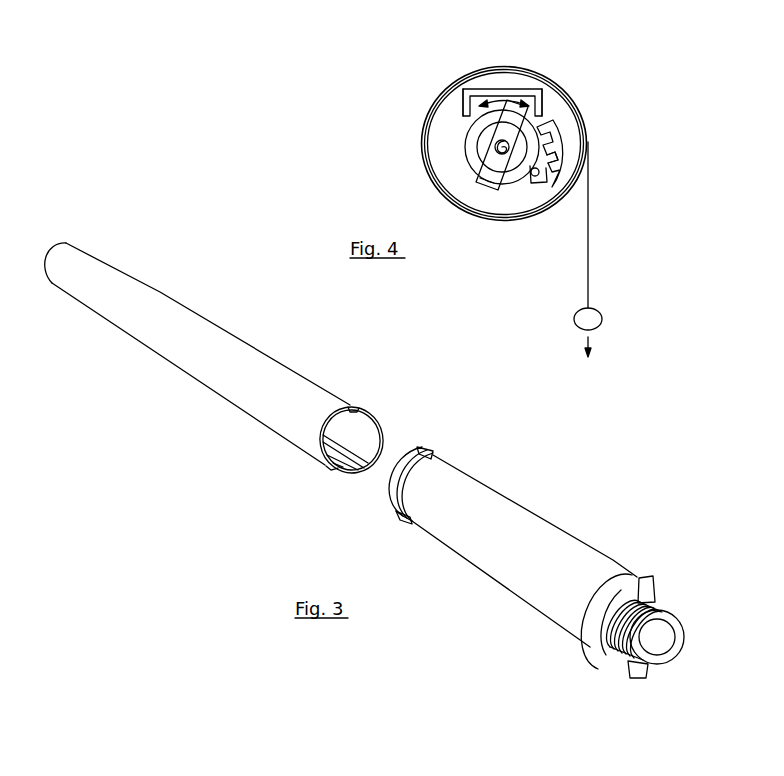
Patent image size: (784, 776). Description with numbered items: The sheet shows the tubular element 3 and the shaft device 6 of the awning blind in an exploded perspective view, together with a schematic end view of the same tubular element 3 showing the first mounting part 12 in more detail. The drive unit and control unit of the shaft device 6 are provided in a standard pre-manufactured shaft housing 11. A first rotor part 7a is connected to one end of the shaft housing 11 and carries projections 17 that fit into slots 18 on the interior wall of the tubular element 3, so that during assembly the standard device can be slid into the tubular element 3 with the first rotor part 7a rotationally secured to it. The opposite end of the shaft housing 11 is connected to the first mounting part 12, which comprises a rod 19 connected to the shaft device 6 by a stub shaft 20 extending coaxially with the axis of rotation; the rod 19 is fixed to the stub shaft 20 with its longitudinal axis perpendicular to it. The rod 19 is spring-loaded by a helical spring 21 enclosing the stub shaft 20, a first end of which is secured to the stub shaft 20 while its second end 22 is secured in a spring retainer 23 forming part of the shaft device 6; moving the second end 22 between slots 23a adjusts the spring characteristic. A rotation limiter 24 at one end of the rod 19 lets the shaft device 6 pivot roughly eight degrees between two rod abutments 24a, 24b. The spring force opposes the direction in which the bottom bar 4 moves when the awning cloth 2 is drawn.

In FIG. 4, the awning cloth 2 is at (588, 228).
In FIG. 4, the tubular element 3 is at (493, 68).
In FIG. 3, the tubular element 3 is at (223, 353).
In FIG. 4, the bottom bar 4 is at (592, 318).
In FIG. 3, the shaft device 6 is at (516, 471).
In FIG. 3, the first rotor part 7a is at (400, 513).
In FIG. 3, the shaft housing 11 is at (473, 537).
In FIG. 4, the first mounting part 12 is at (453, 128).
In FIG. 3, the projections 17 is at (428, 449).
In FIG. 3, the slots 18 is at (349, 407).
In FIG. 4, the rod 19 is at (492, 183).
In FIG. 3, the rod 19 is at (647, 576).
In FIG. 4, the stub shaft 20 is at (469, 156).
In FIG. 3, the stub shaft 20 is at (586, 590).
In FIG. 4, the helical spring 21 is at (500, 147).
In FIG. 3, the helical spring 21 is at (613, 641).
In FIG. 4, the second end 22 is at (534, 176).
In FIG. 3, the second end 22 is at (667, 600).
In FIG. 4, the spring retainer 23 is at (560, 148).
In FIG. 4, the slots 23a is at (553, 131).
In FIG. 4, the rotation limiter 24 is at (507, 104).
In FIG. 4, the rod abutment 24a is at (466, 96).
In FIG. 4, the rod abutment 24b is at (542, 104).